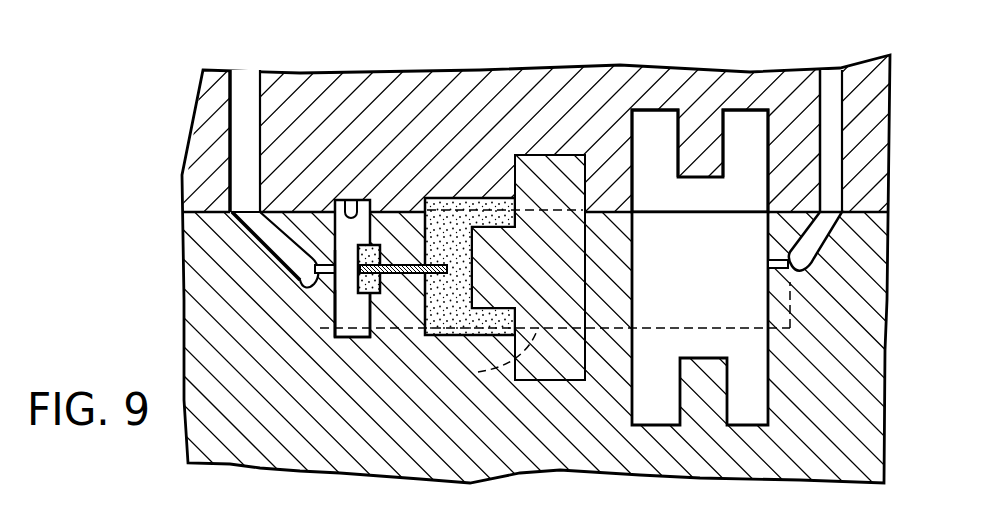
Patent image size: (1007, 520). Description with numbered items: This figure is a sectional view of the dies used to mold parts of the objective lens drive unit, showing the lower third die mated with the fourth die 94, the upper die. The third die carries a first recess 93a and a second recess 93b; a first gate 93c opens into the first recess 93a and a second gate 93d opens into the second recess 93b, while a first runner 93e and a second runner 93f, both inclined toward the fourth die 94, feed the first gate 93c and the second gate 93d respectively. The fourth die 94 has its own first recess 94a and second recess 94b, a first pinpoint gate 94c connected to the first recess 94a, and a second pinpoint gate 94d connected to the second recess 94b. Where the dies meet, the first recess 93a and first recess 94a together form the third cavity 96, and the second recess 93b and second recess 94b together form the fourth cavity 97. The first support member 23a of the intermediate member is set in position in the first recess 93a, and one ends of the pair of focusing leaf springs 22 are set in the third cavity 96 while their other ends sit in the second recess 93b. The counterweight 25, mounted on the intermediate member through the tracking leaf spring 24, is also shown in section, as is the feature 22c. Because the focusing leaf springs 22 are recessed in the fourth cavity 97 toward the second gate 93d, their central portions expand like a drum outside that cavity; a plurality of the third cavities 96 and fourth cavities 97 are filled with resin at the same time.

The focusing leaf springs 22 is at (670, 207).
The arcuate recess 22c is at (478, 372).
The first support member 23a is at (382, 290).
The tracking leaf spring 24 is at (410, 278).
The counterweight 25 is at (560, 358).
The first recess 93a is at (336, 306).
The second recess 93b is at (703, 357).
The first gate 93c is at (345, 291).
The second gate 93d is at (772, 263).
The first runner 93e is at (267, 232).
The second runner 93f is at (808, 232).
The fourth die 94 is at (459, 90).
The first recess 94a is at (343, 195).
The second recess 94b is at (651, 115).
The first pinpoint gate 94c is at (246, 92).
The second pinpoint gate 94d is at (830, 87).
The third cavity 96 is at (347, 288).
The fourth cavity 97 is at (742, 127).